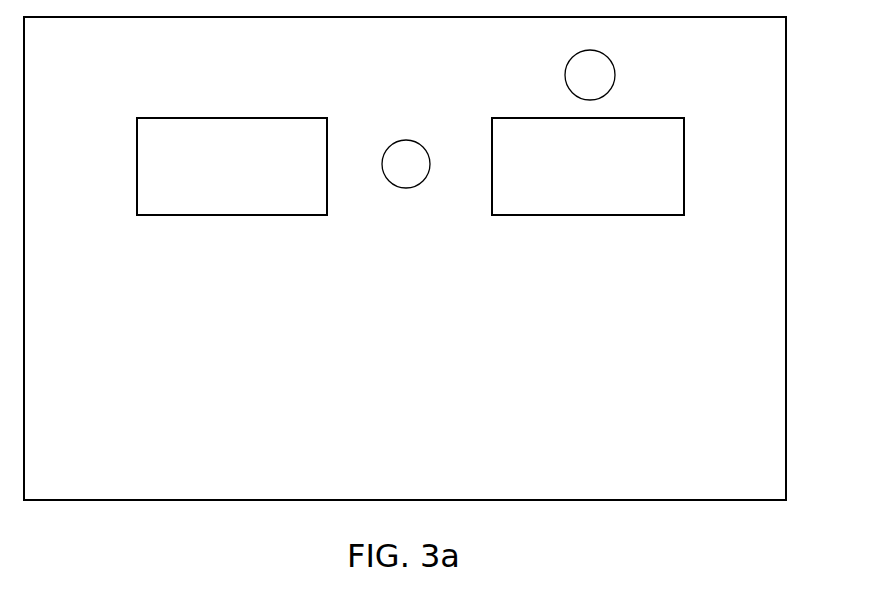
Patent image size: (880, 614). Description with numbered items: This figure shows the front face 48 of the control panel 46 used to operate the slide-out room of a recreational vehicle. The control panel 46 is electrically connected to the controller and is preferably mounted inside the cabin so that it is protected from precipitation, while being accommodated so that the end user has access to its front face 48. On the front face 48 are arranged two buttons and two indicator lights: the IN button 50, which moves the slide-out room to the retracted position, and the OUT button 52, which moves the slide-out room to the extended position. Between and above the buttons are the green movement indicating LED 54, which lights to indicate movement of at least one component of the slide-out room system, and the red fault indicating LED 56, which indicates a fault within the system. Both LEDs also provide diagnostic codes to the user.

The control panel 46 is at (577, 518).
The front face 48 is at (725, 327).
The IN button 50 is at (155, 181).
The OUT button 52 is at (657, 145).
The green movement indicating LED 54 is at (406, 171).
The red fault indicating LED 56 is at (597, 75).